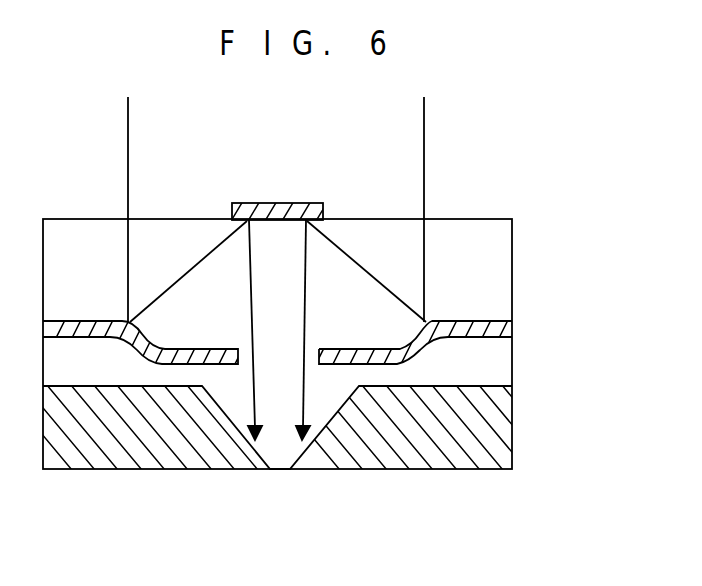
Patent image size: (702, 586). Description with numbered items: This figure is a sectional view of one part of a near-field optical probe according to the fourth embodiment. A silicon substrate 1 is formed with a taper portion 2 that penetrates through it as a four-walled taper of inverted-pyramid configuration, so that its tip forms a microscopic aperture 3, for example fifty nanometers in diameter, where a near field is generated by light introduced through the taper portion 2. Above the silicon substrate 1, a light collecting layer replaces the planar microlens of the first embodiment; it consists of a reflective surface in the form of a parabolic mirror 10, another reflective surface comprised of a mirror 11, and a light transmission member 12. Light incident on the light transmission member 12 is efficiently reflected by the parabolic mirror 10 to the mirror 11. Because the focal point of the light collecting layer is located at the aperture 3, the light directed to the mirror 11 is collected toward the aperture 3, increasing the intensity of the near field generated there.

The silicon substrate 1 is at (506, 422).
The taper portion 2 is at (243, 423).
The aperture 3 is at (281, 469).
The parabolic mirror 10 is at (512, 322).
The mirror 11 is at (283, 202).
The light transmission member 12 is at (488, 267).